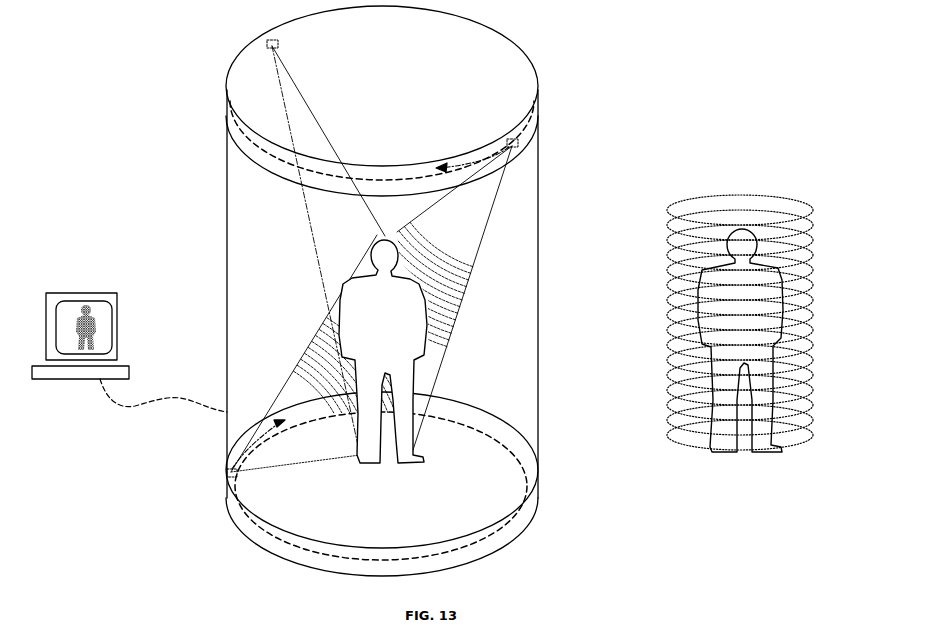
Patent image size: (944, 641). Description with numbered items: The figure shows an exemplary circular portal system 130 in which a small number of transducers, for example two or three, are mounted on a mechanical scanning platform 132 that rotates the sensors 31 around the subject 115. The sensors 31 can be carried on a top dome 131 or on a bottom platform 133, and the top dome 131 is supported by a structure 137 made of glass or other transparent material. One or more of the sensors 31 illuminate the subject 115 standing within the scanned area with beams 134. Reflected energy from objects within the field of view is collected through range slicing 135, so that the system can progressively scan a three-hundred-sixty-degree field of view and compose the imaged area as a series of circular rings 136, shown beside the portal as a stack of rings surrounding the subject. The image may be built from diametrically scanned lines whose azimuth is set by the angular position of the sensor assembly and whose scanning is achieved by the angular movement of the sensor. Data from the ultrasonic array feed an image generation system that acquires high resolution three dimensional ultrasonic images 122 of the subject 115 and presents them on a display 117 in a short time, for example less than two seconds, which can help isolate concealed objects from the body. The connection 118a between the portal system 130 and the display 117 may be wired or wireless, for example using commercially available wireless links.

The circular portal system 130 is at (556, 54).
The top dome 131 is at (462, 42).
The mechanical scanning platform 132 is at (247, 140).
The bottom platform 133 is at (525, 458).
The beams 134 is at (310, 243).
The range slicing 135 is at (427, 284).
The circular rings 136 is at (670, 265).
The structure 137 is at (227, 287).
The sensors 31 is at (266, 43).
The subject 115 is at (365, 285).
The display 117 is at (53, 297).
The three dimensional ultrasonic images 122 is at (85, 310).
The connection 118a is at (162, 403).